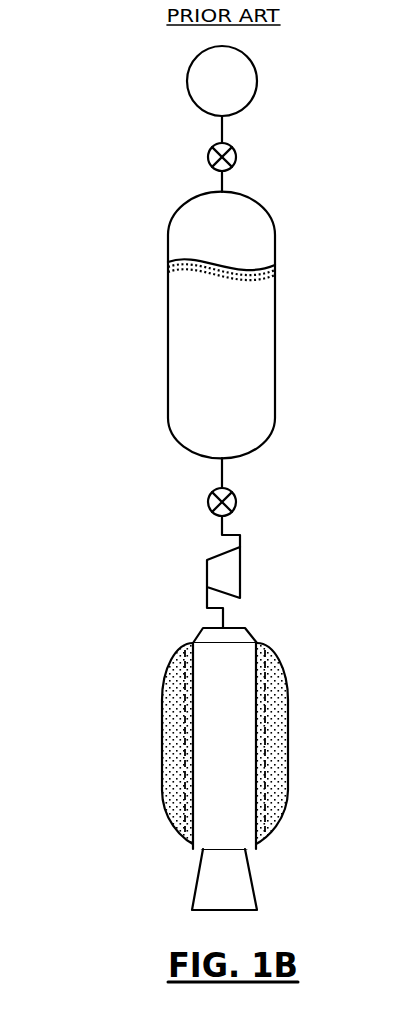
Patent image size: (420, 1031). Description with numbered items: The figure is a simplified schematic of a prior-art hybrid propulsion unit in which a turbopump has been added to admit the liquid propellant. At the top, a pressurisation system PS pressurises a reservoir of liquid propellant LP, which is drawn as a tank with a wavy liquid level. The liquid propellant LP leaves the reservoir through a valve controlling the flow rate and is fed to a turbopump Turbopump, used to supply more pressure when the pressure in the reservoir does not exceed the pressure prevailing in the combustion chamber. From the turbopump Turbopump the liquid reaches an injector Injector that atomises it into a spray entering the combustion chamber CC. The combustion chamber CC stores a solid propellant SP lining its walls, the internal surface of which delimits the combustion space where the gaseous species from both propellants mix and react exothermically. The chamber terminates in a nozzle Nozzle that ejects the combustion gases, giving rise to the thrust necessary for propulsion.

The pressurisation system PS is at (257, 80).
The liquid propellant LP is at (241, 376).
The turbopump Turbopump is at (207, 575).
The injector Injector is at (257, 633).
The solid propellant SP is at (278, 733).
The combustion chamber CC is at (208, 762).
The nozzle Nozzle is at (253, 887).